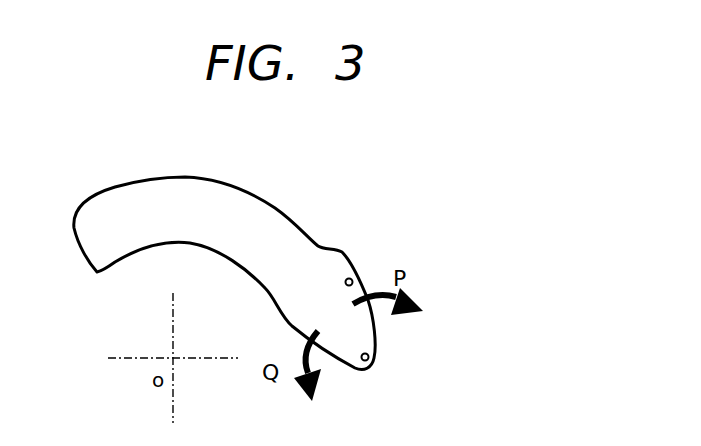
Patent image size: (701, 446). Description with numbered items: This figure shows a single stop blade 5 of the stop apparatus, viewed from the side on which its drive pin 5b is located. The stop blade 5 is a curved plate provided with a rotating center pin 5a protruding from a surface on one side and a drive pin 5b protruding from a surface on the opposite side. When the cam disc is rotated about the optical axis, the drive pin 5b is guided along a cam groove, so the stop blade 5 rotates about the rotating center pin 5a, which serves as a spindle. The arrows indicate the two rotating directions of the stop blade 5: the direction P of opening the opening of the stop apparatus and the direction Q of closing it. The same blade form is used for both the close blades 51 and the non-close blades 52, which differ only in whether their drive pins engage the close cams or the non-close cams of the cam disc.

The stop blade 5 is at (235, 258).
The close blade 51 is at (224, 273).
The non-close blade 52 is at (233, 205).
The rotating center pin 5a is at (369, 357).
The drive pin 5b is at (357, 268).